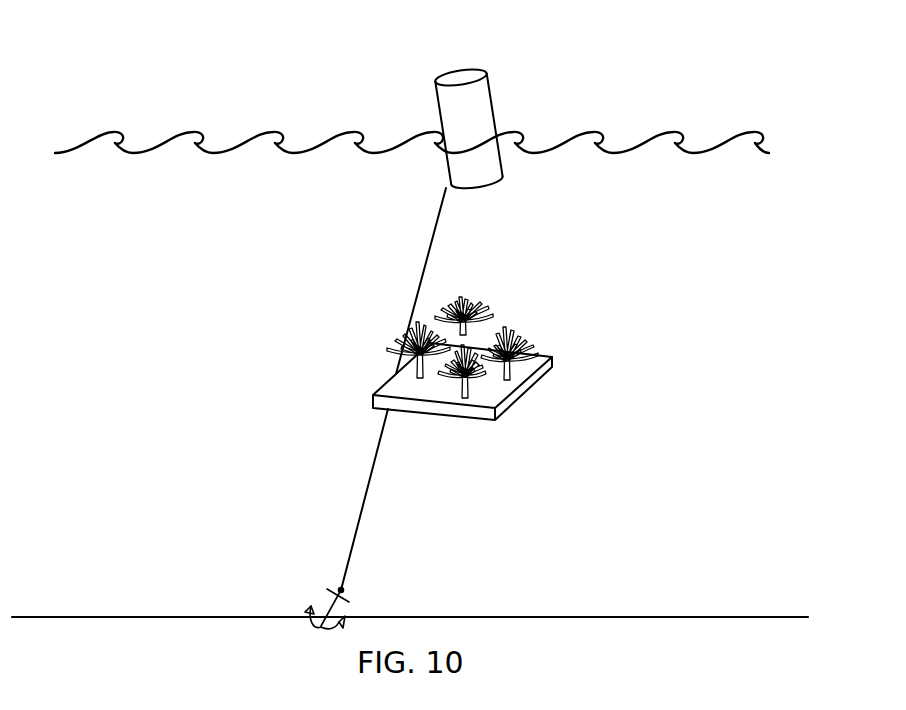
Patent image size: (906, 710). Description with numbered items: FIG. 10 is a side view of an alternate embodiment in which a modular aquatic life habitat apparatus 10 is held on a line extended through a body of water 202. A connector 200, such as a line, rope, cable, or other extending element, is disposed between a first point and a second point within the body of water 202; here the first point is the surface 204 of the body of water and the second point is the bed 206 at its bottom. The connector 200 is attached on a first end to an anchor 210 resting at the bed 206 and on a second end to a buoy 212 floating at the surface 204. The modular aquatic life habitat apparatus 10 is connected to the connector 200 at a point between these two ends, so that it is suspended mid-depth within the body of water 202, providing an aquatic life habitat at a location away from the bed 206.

The modular aquatic life habitat apparatus 10 is at (522, 385).
The connector 200 is at (425, 268).
The body of water 202 is at (271, 370).
The surface 204 is at (693, 153).
The bed 206 is at (743, 617).
The anchor 210 is at (320, 603).
The buoy 212 is at (475, 105).